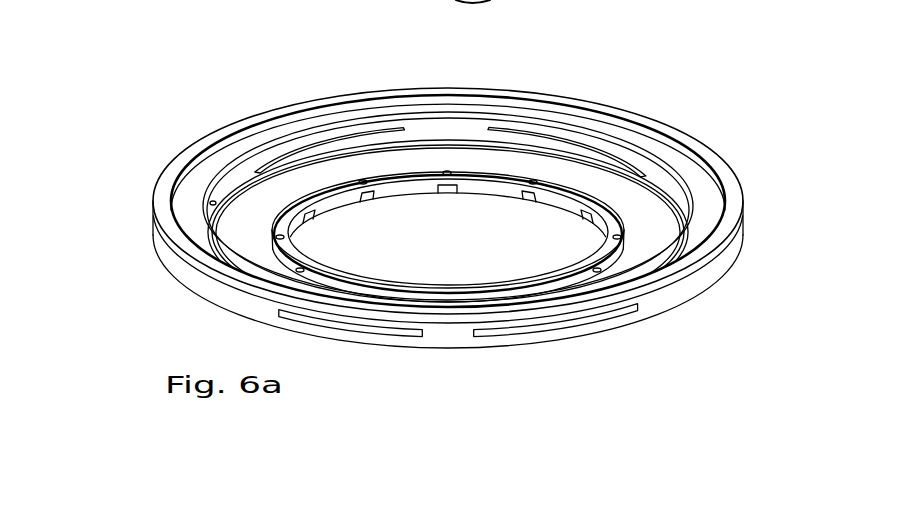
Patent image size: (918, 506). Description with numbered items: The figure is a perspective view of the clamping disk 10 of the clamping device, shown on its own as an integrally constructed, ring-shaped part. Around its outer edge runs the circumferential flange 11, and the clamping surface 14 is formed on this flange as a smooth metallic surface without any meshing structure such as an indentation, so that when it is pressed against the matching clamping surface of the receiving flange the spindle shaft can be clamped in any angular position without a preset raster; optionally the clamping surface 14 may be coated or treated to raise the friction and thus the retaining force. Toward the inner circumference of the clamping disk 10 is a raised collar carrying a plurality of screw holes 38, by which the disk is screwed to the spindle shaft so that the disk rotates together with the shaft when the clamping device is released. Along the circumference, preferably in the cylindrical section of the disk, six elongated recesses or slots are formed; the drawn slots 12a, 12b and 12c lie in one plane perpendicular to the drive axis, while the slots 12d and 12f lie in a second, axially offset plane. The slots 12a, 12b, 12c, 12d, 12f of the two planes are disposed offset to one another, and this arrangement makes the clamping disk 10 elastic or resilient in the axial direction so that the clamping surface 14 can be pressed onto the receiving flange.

The clamping disk 10 is at (704, 92).
The circumferential flange 11 is at (167, 246).
The slot 12a is at (401, 337).
The slot 12b is at (628, 312).
The slot 12c is at (445, 143).
The slot 12d is at (250, 157).
The slot 12f is at (546, 130).
The clamping surface 14 is at (728, 175).
The screw holes 38 is at (206, 199).